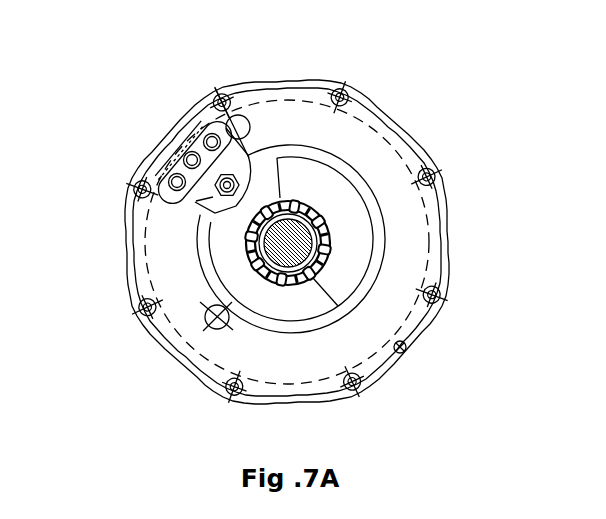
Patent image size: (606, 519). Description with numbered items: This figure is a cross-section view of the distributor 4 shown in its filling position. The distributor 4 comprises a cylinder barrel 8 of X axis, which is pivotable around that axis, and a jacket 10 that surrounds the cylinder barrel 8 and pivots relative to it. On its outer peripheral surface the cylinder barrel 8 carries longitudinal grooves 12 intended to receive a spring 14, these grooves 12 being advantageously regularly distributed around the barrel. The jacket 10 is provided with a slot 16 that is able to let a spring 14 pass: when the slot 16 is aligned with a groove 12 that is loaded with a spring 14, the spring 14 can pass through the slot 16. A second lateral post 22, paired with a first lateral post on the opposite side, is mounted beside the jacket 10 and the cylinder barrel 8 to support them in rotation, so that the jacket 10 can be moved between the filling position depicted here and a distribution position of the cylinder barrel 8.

The distributor 4 is at (440, 128).
The cylinder barrel 8 is at (208, 178).
The jacket 10 is at (140, 195).
The longitudinal grooves 12 is at (200, 133).
The spring 14 is at (160, 184).
The slot 16 is at (197, 143).
The second lateral post 22 is at (440, 226).